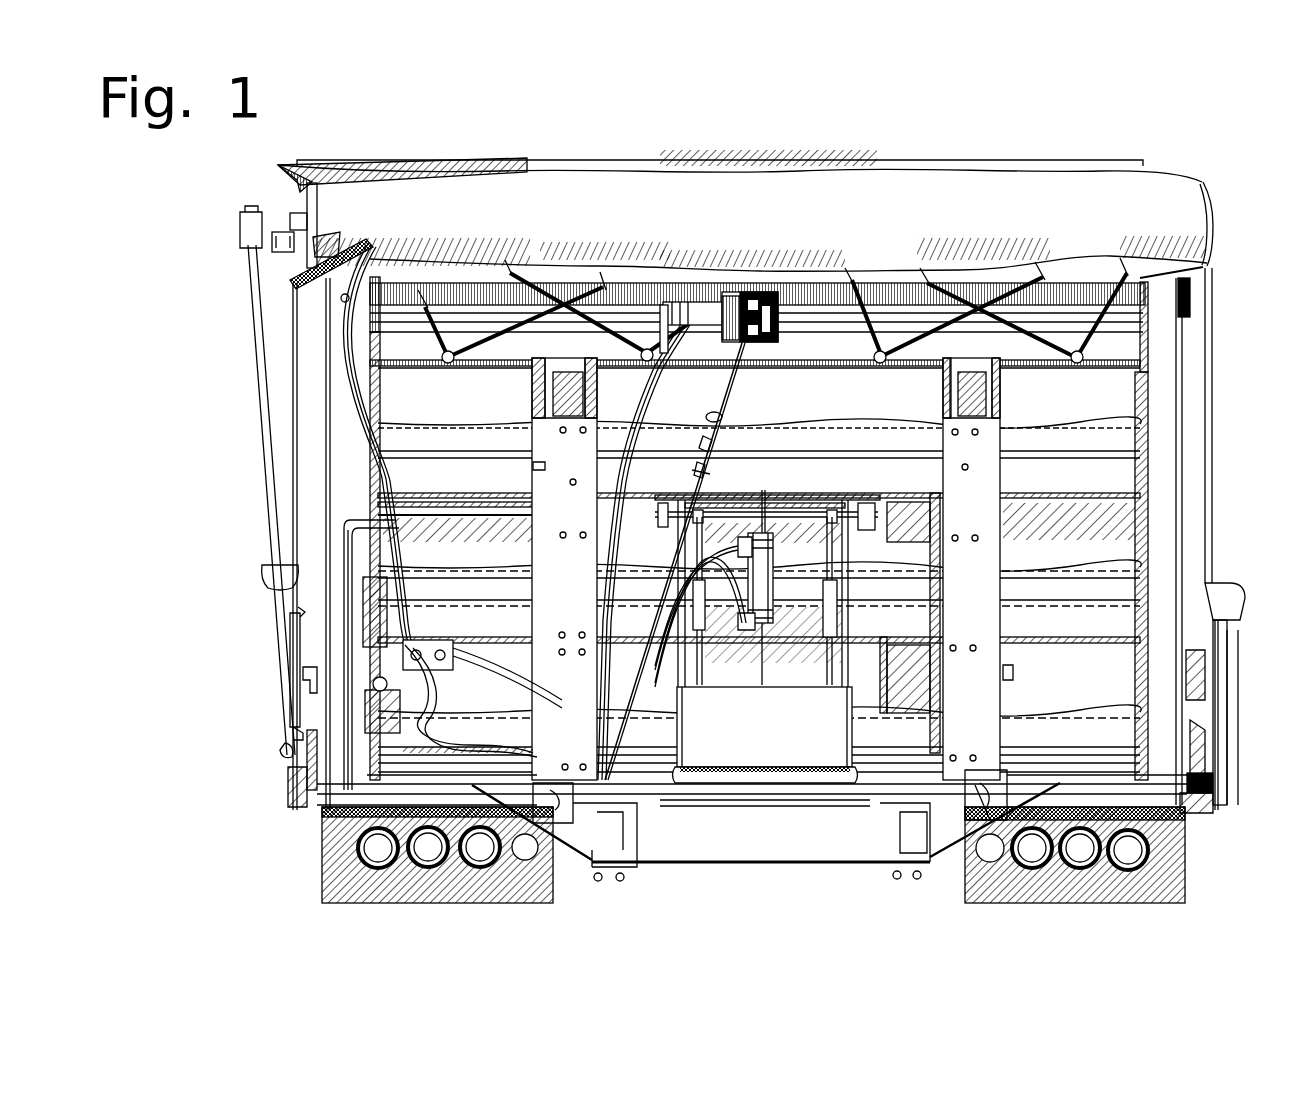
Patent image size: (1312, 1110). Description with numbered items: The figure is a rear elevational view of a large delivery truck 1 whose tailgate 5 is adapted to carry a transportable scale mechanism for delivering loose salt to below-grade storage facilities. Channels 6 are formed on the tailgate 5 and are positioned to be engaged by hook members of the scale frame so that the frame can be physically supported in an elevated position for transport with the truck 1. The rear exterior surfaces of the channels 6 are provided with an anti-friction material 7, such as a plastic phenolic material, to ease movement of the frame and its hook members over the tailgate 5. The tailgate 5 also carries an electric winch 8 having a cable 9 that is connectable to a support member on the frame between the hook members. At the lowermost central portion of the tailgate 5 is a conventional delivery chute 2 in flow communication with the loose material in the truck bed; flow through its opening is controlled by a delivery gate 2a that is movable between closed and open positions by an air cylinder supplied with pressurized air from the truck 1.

The delivery truck 1 is at (1123, 145).
The delivery chute 2 is at (748, 832).
The delivery gate 2a is at (793, 770).
The tailgate 5 is at (1143, 560).
The channels 6 is at (533, 465).
The anti-friction material 7 is at (558, 605).
The electric winch 8 is at (768, 292).
The cable 9 is at (728, 383).